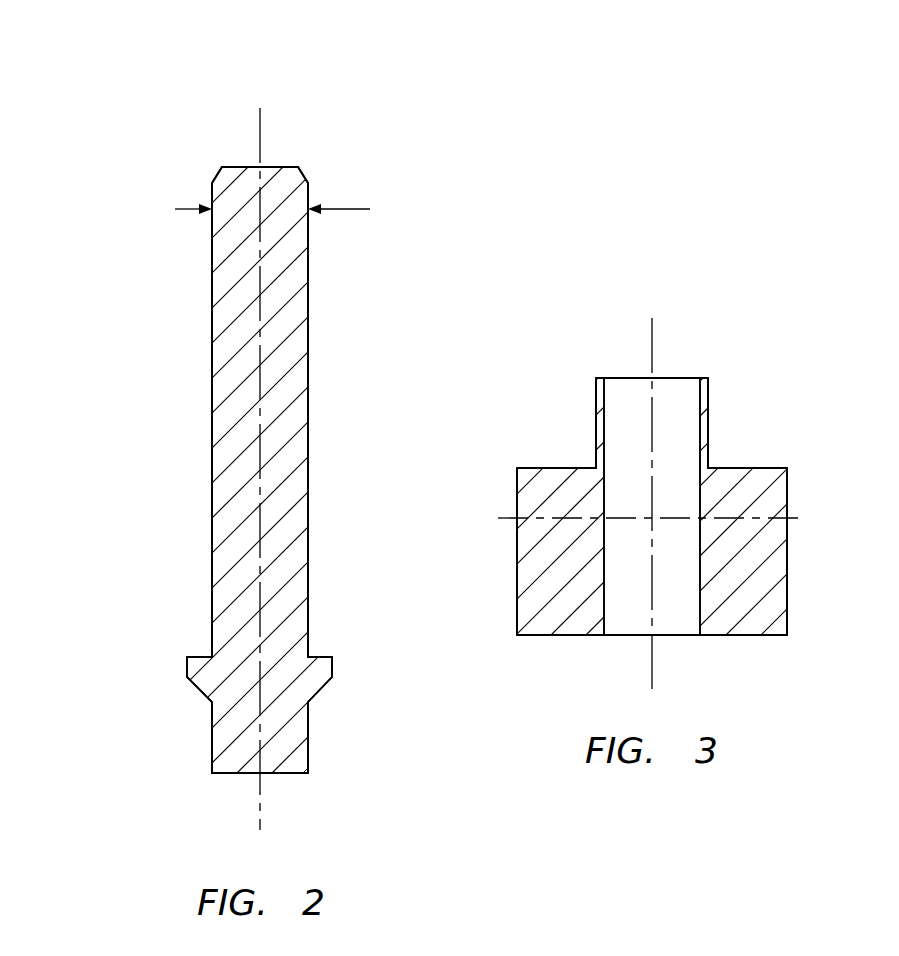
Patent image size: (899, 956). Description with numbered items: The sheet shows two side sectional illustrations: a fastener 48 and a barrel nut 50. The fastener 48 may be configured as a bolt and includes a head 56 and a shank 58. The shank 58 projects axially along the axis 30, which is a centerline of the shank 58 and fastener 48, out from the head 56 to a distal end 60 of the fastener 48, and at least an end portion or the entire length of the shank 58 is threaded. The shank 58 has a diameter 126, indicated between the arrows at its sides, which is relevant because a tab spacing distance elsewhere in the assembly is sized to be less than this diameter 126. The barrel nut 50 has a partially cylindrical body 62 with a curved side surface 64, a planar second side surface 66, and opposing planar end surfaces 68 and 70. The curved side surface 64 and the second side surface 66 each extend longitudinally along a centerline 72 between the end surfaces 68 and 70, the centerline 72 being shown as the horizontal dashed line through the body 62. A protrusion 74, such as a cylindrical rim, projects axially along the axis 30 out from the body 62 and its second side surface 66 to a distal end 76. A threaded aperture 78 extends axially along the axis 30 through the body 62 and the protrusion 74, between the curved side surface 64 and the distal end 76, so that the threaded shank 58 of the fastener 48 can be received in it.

In FIG. 2, the fastener 48 is at (178, 150).
In FIG. 2, the distal end 60 is at (281, 166).
In FIG. 2, the shank 58 is at (162, 168).
In FIG. 2, the head 56 is at (162, 660).
In FIG. 2, the diameter 126 is at (348, 209).
In FIG. 2, the axis 30 is at (261, 820).
In FIG. 3, the axis 30 is at (653, 680).
In FIG. 3, the barrel nut 50 is at (755, 343).
In FIG. 3, the threaded aperture 78 is at (624, 398).
In FIG. 3, the distal end 76 is at (704, 378).
In FIG. 3, the protrusion 74 is at (720, 421).
In FIG. 3, the second side surface 66 is at (551, 468).
In FIG. 3, the centerline 72 is at (797, 517).
In FIG. 3, the body 62 is at (799, 553).
In FIG. 3, the end surface 70 is at (787, 590).
In FIG. 3, the end surface 68 is at (517, 548).
In FIG. 3, the curved side surface 64 is at (542, 637).